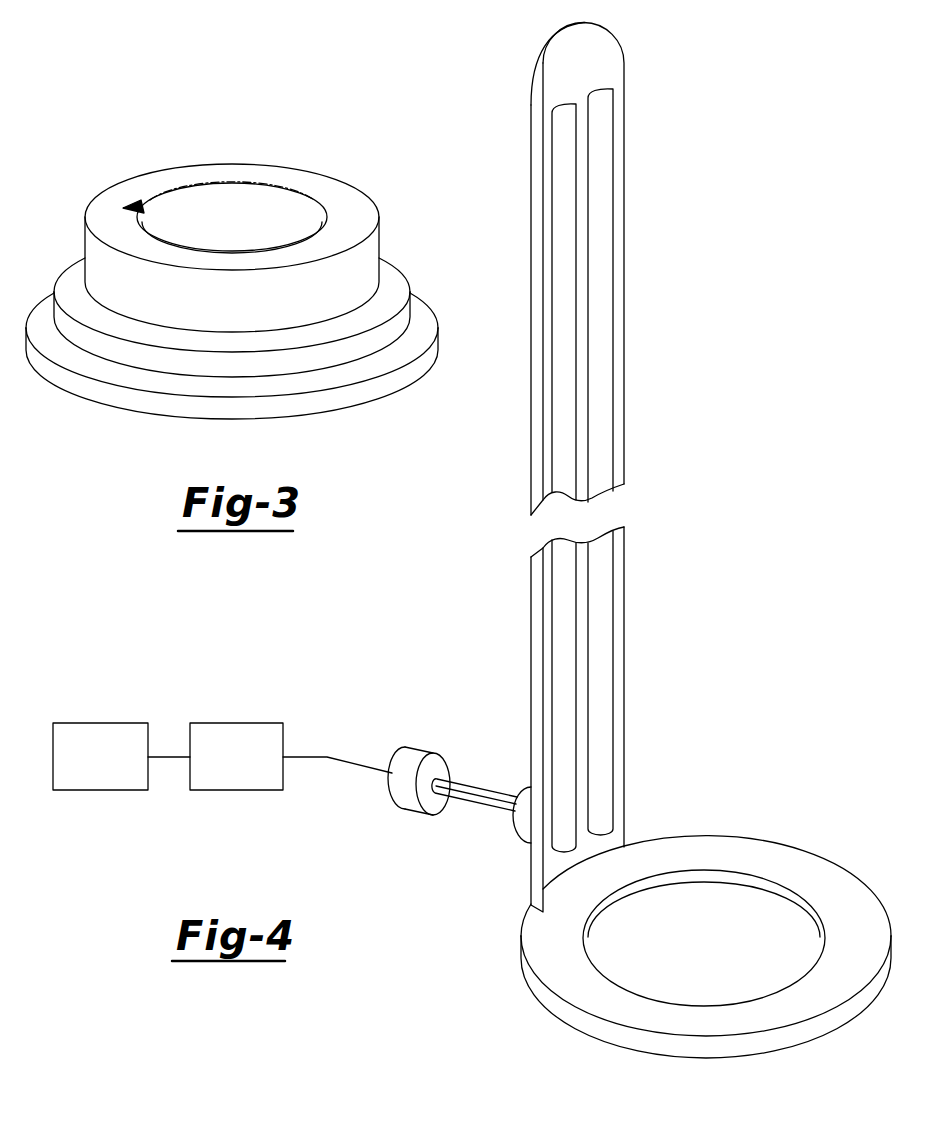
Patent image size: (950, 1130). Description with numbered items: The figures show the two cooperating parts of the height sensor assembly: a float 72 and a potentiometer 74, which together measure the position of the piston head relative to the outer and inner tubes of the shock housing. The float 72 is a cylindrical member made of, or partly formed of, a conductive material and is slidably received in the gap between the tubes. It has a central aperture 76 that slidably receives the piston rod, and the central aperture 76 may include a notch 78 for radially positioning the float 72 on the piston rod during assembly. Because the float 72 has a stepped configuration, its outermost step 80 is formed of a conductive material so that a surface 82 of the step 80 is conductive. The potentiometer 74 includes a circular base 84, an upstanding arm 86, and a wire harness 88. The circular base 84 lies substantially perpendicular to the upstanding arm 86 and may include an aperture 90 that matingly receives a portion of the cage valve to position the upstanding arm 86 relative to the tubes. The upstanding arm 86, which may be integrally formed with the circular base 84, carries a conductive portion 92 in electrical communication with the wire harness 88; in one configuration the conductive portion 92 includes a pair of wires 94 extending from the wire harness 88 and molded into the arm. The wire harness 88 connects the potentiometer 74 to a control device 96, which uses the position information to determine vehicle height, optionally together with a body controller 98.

In FIG. 3, the float 72 is at (84, 177).
In FIG. 4, the potentiometer 74 is at (626, 161).
In FIG. 3, the central aperture 76 is at (250, 205).
In FIG. 3, the notch 78 is at (140, 203).
In FIG. 3, the outermost step 80 is at (40, 318).
In FIG. 3, the surface 82 is at (125, 402).
In FIG. 4, the circular base 84 is at (753, 855).
In FIG. 4, the upstanding arm 86 is at (618, 323).
In FIG. 4, the wire harness 88 is at (480, 798).
In FIG. 4, the aperture 90 is at (700, 914).
In FIG. 4, the conductive portion 92 is at (541, 172).
In FIG. 4, the pair of wires 94 is at (566, 251).
In FIG. 4, the control device 96 is at (224, 765).
In FIG. 4, the body controller 98 is at (88, 765).